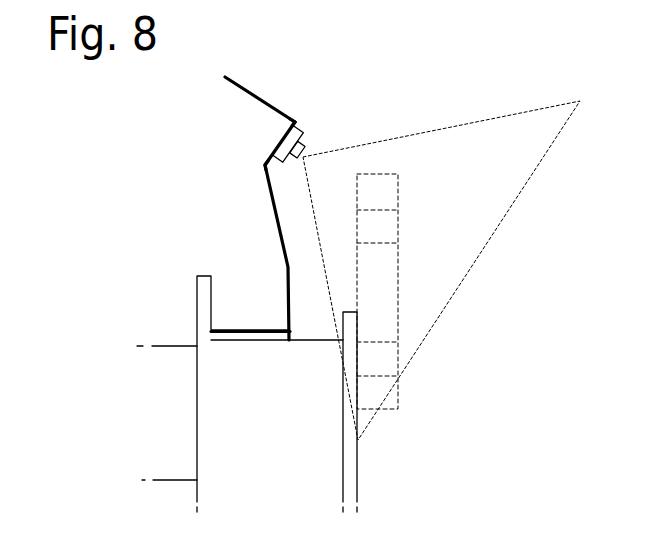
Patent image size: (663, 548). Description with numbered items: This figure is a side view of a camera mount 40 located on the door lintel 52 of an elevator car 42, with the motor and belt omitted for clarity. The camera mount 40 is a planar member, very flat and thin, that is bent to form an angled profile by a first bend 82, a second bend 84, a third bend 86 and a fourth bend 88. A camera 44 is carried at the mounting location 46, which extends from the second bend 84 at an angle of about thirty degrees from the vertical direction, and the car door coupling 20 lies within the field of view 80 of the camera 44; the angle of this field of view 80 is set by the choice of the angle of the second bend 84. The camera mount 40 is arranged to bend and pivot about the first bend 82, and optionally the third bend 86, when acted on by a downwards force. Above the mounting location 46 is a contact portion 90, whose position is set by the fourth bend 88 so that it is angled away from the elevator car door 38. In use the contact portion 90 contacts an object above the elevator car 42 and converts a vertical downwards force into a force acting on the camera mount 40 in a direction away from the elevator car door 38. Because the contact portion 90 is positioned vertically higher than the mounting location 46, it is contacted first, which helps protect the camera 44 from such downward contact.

The car door coupling 20 is at (398, 230).
The elevator car door 38 is at (350, 468).
The camera mount 40 is at (265, 93).
The elevator car 42 is at (233, 384).
The camera 44 is at (305, 145).
The mounting location 46 is at (278, 143).
The door lintel 52 is at (247, 340).
The field of view 80 is at (528, 183).
The first bend 82 is at (288, 327).
The second bend 84 is at (265, 165).
The third bend 86 is at (287, 267).
The fourth bend 88 is at (292, 123).
The contact portion 90 is at (245, 88).